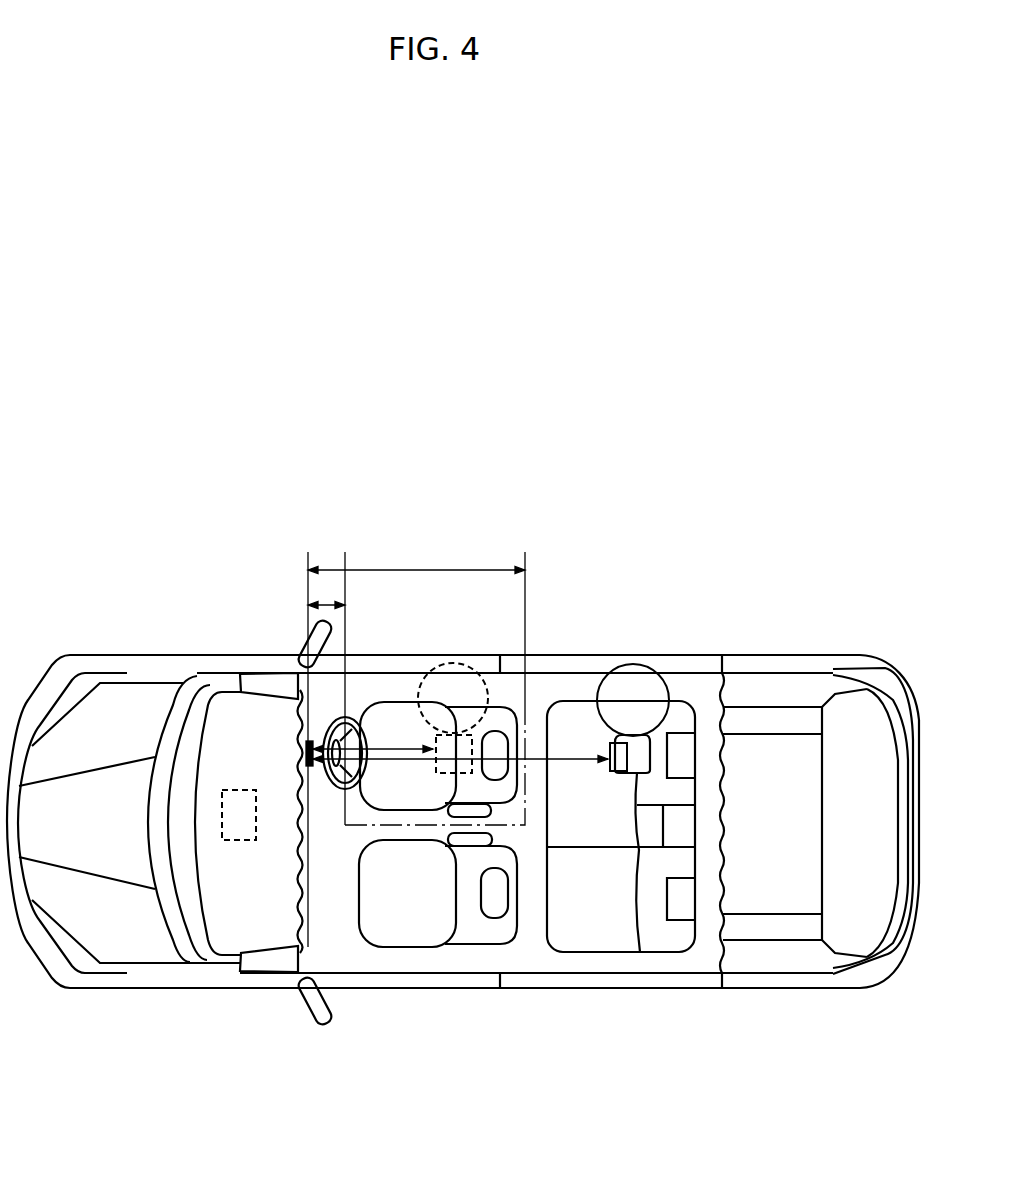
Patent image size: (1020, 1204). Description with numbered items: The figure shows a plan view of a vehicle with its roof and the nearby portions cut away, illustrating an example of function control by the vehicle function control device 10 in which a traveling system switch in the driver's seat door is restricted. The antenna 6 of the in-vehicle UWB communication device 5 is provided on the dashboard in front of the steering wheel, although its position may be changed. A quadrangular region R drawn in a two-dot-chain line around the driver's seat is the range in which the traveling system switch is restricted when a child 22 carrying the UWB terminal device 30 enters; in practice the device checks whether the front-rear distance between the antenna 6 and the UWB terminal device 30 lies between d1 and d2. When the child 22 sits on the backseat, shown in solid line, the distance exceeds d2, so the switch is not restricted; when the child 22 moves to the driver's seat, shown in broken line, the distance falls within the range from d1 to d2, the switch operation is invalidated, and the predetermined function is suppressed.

The in-vehicle UWB communication device 5 is at (303, 752).
The antenna 6 is at (380, 682).
The vehicle function control device 10 is at (218, 840).
The child 22 is at (462, 663).
The UWB terminal device 30 is at (433, 773).
The distance d1 is at (327, 602).
The distance d2 is at (432, 570).
The region R is at (533, 672).